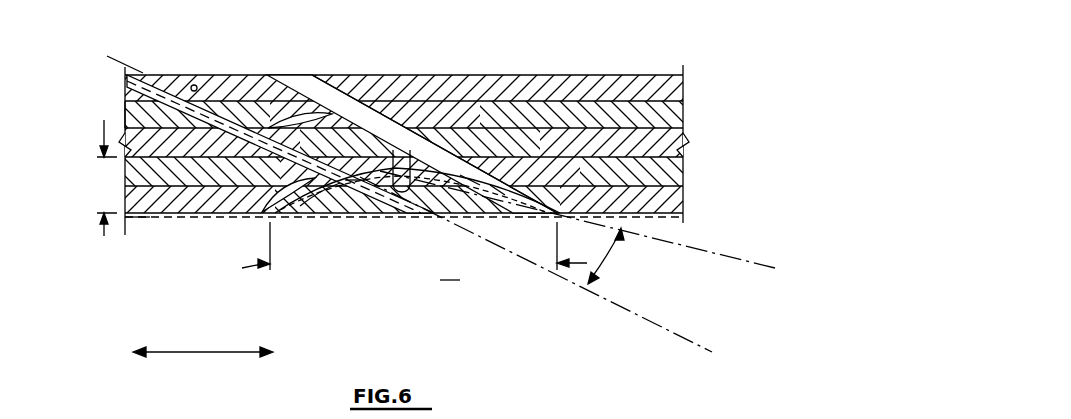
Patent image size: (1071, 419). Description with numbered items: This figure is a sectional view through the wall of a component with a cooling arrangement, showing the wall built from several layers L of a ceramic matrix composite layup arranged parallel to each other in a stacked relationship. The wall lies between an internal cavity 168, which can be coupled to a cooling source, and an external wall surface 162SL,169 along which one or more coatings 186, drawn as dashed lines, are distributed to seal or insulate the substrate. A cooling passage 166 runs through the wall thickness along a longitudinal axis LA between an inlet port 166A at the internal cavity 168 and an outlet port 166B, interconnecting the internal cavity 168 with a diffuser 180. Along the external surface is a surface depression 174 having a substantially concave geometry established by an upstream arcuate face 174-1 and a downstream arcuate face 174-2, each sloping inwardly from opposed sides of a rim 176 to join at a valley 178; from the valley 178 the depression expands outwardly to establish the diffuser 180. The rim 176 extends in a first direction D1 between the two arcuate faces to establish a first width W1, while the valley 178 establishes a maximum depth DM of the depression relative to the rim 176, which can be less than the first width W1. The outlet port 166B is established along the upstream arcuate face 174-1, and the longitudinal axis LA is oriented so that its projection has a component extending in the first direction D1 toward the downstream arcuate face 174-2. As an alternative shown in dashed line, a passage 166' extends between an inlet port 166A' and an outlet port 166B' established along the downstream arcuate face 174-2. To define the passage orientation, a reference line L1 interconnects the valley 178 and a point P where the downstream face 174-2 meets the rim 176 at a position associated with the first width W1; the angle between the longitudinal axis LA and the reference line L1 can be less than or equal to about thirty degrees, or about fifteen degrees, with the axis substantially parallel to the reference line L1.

The longitudinal axis LA is at (118, 53).
The inlet port 166A is at (280, 108).
The cooling passage 166 is at (216, 61).
The inlet port 166A' is at (412, 113).
The passage 166' is at (434, 127).
The valley 178 is at (401, 165).
The internal cavity 168 is at (535, 59).
The layers L is at (125, 115).
The maximum depth DM is at (98, 128).
The coating 186 is at (145, 220).
The first width W1 is at (242, 268).
The rim 176 is at (275, 216).
The first direction D1 is at (210, 354).
The surface depression 174 is at (417, 272).
The upstream arcuate face 174-1 is at (316, 205).
The outlet port 166B is at (383, 216).
The outlet port 166B' is at (458, 238).
The downstream arcuate face 174-2 is at (497, 180).
The point P is at (550, 220).
The reference line L1 is at (773, 267).
The external wall surface 162SL,169 is at (665, 215).
The diffuser 180 is at (450, 295).